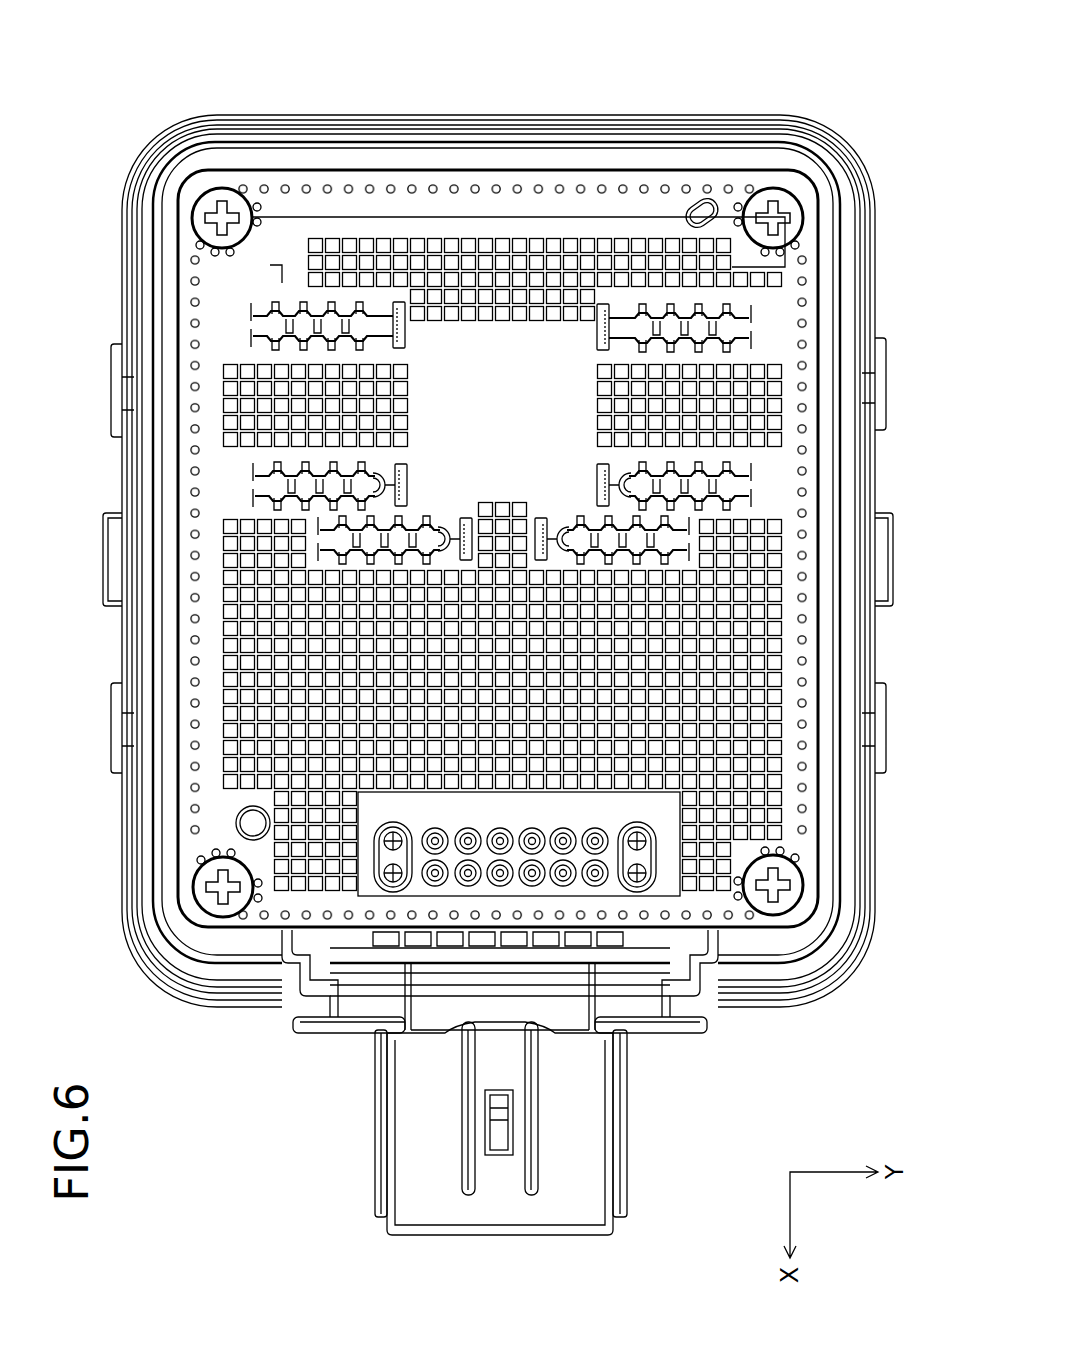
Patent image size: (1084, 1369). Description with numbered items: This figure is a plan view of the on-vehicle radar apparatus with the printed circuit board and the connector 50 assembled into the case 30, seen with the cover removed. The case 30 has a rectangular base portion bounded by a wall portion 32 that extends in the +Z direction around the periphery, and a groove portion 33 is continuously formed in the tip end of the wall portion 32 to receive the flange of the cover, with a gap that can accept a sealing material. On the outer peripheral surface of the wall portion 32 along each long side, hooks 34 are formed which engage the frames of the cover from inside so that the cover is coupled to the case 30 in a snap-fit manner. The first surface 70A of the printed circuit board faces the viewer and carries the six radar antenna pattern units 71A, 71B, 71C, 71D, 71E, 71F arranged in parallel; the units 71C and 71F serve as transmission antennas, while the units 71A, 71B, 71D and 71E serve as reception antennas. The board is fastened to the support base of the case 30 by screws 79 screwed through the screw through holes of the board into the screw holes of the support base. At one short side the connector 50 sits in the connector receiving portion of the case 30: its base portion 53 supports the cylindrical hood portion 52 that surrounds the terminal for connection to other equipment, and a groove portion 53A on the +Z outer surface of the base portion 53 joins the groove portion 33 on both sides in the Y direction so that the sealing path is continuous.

The case 30 is at (792, 113).
The wall portion 32 is at (848, 927).
The groove portion 33 is at (833, 937).
The hook 34 is at (113, 390).
The connector 50 is at (358, 1267).
The hood portion 52 is at (385, 1155).
The base portion 53 is at (680, 1032).
The groove portion 53A is at (623, 973).
The first surface 70A is at (237, 498).
The radar antenna pattern unit 71A is at (318, 527).
The radar antenna pattern unit 71B is at (250, 473).
The radar antenna pattern unit 71C is at (250, 312).
The radar antenna pattern unit 71D is at (690, 525).
The radar antenna pattern unit 71E is at (753, 470).
The radar antenna pattern unit 71F is at (753, 303).
The screw 79 is at (210, 202).